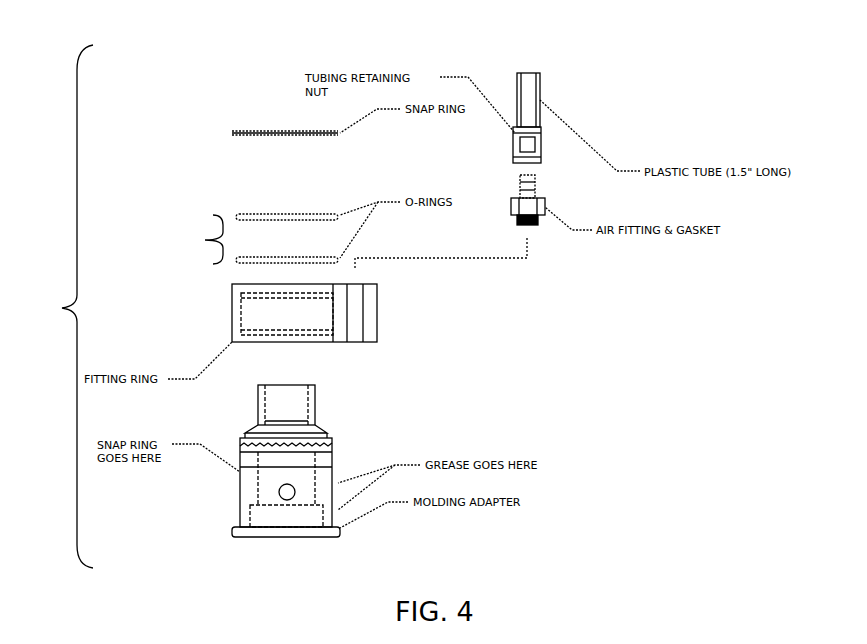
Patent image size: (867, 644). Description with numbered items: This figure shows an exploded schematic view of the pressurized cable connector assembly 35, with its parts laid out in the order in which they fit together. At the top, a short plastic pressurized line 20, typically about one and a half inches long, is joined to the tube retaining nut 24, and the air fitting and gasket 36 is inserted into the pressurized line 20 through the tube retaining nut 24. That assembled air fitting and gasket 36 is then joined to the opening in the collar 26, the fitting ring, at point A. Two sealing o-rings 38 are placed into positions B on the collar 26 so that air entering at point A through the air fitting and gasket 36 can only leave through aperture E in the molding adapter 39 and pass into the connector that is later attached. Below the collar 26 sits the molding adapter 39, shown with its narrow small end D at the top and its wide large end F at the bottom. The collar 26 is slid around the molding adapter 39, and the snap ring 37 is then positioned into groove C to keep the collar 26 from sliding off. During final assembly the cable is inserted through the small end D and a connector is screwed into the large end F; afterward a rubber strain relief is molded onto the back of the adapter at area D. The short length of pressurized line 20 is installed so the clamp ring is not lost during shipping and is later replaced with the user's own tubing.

The pressurized line 20 is at (540, 84).
The tube retaining nut 24 is at (541, 140).
The collar 26 is at (376, 312).
The pressurized cable connector assembly 35 is at (58, 306).
The air fitting and gasket 36 is at (537, 210).
The snap ring 37 is at (232, 133).
The sealing o-rings 38 is at (205, 240).
The molding adapter 39 is at (240, 495).
The point A is at (360, 284).
The positions B is at (238, 290).
The groove C is at (332, 467).
The small end D is at (290, 385).
The aperture E is at (292, 496).
The large end F is at (290, 537).